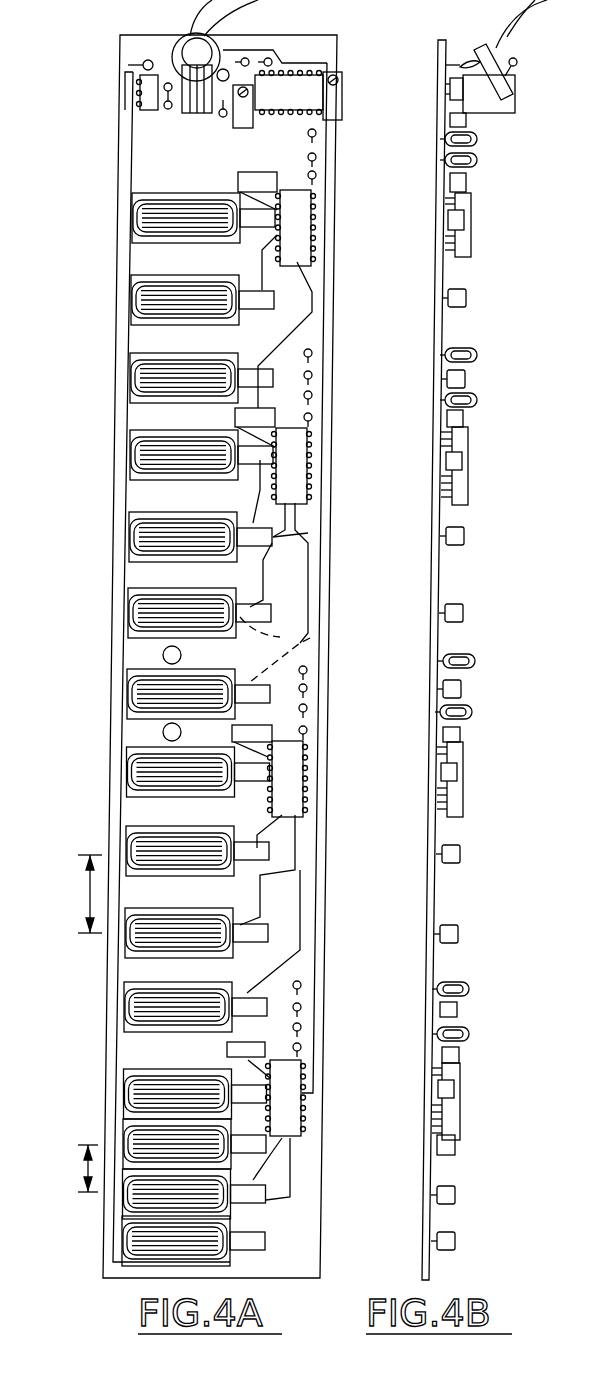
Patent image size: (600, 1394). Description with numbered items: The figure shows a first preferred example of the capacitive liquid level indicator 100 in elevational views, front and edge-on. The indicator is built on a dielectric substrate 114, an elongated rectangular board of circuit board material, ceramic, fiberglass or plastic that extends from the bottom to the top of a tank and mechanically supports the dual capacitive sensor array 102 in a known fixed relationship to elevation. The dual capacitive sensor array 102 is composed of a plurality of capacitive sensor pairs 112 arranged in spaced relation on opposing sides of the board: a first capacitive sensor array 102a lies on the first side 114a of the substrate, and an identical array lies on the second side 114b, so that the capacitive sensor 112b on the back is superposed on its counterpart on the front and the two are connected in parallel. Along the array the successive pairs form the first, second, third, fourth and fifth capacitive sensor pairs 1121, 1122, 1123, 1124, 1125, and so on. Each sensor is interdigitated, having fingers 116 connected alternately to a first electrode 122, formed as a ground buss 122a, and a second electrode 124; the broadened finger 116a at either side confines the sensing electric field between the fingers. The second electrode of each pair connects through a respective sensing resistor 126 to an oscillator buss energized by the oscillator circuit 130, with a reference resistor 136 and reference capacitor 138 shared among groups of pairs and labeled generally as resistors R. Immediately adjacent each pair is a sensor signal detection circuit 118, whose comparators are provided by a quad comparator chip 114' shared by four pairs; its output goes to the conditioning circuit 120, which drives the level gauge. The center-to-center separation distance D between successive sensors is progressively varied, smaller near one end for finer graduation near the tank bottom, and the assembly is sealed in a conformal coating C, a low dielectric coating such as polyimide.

In FIG. 4A, the capacitive liquid level indicator 100 is at (110, 200).
In FIG. 4B, the capacitive liquid level indicator 100 is at (524, 154).
In FIG. 4A, the dual capacitive sensor array 102 is at (136, 336).
In FIG. 4B, the dual capacitive sensor array 102 is at (453, 326).
In FIG. 4A, the first capacitive sensor array 102a is at (138, 575).
In FIG. 4A, the capacitive sensor pair 112 is at (130, 490).
In FIG. 4A, the capacitive sensor 112b is at (142, 718).
In FIG. 4A, the first capacitive sensor pair 1121 is at (120, 1240).
In FIG. 4A, the second capacitive sensor pair 1122 is at (120, 1193).
In FIG. 4A, the third capacitive sensor pair 1123 is at (120, 1143).
In FIG. 4A, the fourth capacitive sensor pair 1124 is at (120, 1097).
In FIG. 4A, the fifth capacitive sensor pair 1125 is at (122, 1015).
In FIG. 4A, the dielectric substrate 114 is at (348, 578).
In FIG. 4B, the dielectric substrate 114 is at (477, 837).
In FIG. 4A, the quad comparator chip 114' is at (318, 1130).
In FIG. 4B, the first side of the substrate 114a is at (428, 1027).
In FIG. 4B, the second side of the substrate 114b is at (435, 971).
In FIG. 4A, the fingers 116 is at (142, 692).
In FIG. 4A, the broadened finger 116a is at (136, 840).
In FIG. 4A, the sensor signal detection circuit 118 is at (325, 243).
In FIG. 4B, the sensor signal detection circuit 118 is at (477, 721).
In FIG. 4A, the conditioning circuit 120 is at (342, 58).
In FIG. 4B, the conditioning circuit 120 is at (432, 70).
In FIG. 4A, the first electrode 122 is at (122, 646).
In FIG. 4A, the ground buss 122a is at (120, 968).
In FIG. 4A, the second electrode 124 is at (310, 638).
In FIG. 4A, the sensing resistor 126 is at (277, 607).
In FIG. 4A, the oscillator circuit 130 is at (160, 113).
In FIG. 4B, the oscillator circuit 130 is at (522, 86).
In FIG. 4A, the reference resistor 136 is at (235, 1040).
In FIG. 4A, the reference capacitor 138 is at (227, 1049).
In FIG. 4A, the resistor pad R is at (317, 134).
In FIG. 4A, the separation distance D is at (88, 888).
In FIG. 4B, the conformal coating C is at (426, 442).